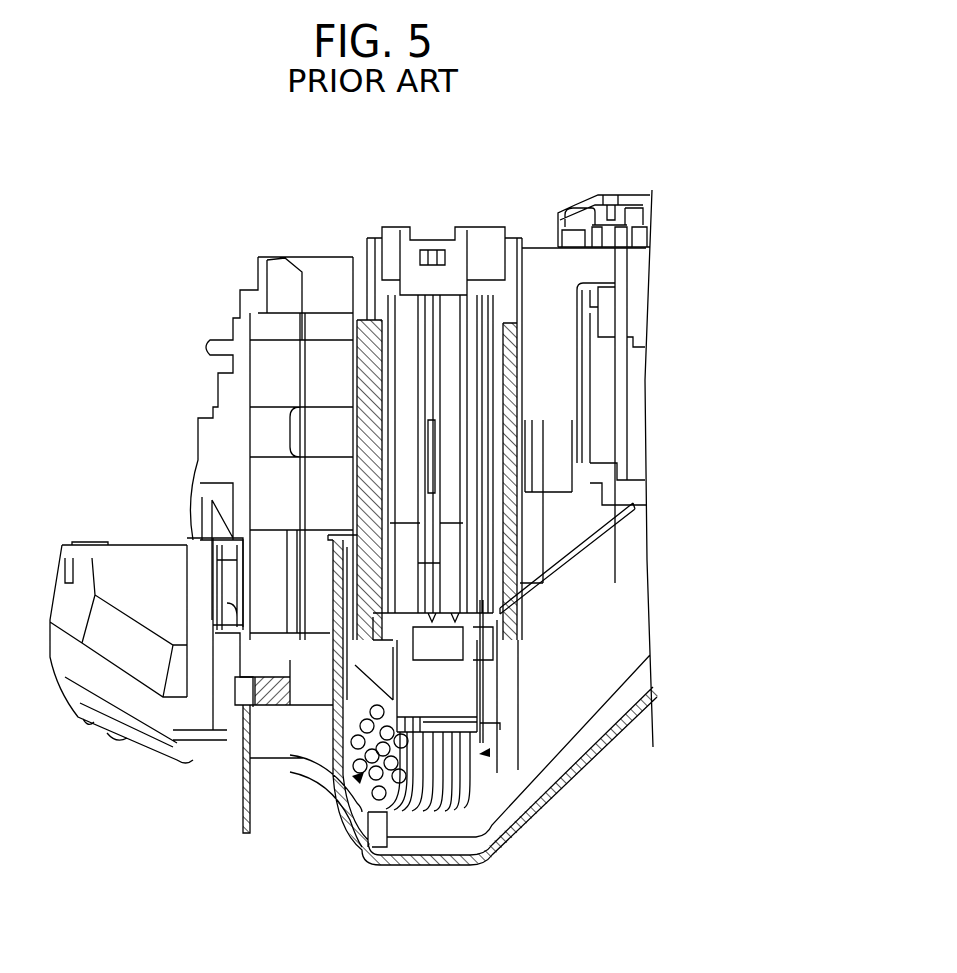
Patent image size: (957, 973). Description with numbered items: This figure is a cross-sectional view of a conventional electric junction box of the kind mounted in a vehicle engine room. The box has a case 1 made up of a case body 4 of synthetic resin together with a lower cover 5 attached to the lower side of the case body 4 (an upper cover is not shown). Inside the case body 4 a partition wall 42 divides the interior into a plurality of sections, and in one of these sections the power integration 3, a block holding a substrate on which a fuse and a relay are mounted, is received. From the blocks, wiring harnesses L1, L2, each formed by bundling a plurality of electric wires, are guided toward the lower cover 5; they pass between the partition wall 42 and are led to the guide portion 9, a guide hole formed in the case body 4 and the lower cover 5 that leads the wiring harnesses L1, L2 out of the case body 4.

The case 1 is at (741, 484).
The power integration 3 is at (469, 222).
The case body 4 is at (590, 502).
The lower cover 5 is at (651, 530).
The guide portion 9 is at (130, 540).
The partition wall 42 is at (360, 387).
The wiring harness L1 is at (362, 775).
The wiring harness L2 is at (482, 754).